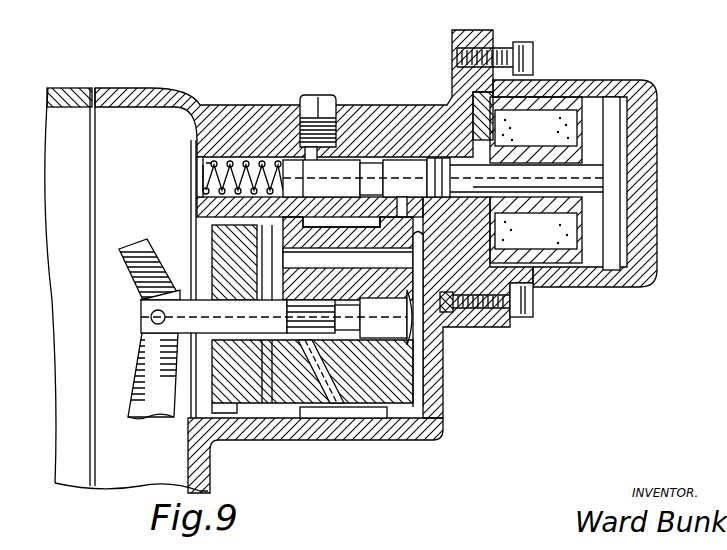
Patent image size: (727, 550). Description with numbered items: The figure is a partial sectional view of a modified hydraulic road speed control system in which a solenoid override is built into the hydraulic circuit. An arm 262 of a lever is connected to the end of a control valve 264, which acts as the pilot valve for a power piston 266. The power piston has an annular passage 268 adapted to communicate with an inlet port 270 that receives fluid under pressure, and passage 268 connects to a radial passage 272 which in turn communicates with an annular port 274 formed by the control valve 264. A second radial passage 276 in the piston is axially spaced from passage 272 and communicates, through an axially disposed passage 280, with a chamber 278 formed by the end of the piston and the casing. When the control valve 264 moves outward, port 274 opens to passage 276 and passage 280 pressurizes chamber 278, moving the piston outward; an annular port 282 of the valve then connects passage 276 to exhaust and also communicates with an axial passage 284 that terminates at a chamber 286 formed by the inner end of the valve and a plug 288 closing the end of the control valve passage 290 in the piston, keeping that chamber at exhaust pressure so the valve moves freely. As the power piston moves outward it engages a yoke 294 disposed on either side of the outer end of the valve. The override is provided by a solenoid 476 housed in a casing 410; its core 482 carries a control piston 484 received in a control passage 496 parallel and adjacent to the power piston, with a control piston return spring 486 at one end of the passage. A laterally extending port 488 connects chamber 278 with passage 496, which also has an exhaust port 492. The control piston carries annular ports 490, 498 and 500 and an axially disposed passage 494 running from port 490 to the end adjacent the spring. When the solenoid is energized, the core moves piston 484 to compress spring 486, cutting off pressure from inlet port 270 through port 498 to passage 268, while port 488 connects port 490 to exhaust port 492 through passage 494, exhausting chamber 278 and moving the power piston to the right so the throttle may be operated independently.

The arm 262 is at (152, 365).
The control valve 264 is at (160, 322).
The power piston 266 is at (214, 238).
The annular passage 268 is at (345, 218).
The inlet port 270 is at (312, 97).
The radial passage 272 is at (330, 420).
The annular port 274 is at (340, 338).
The radial passage 276 is at (262, 275).
The chamber 278 is at (443, 370).
The axially disposed passage 280 is at (318, 262).
The annular port 282 is at (222, 355).
The axial passage 284 is at (272, 345).
The chamber 286 is at (418, 318).
The plug 288 is at (487, 300).
The control valve passage 290 is at (390, 340).
The yoke 294 is at (150, 283).
The casing 410 is at (455, 97).
The solenoid 476 is at (512, 148).
The core 482 is at (598, 186).
The control piston 484 is at (394, 175).
The control piston return spring 486 is at (206, 166).
The laterally extending port 488 is at (410, 210).
The annular port 490 is at (452, 160).
The exhaust port 492 is at (206, 190).
The axially disposed passage 494 is at (343, 170).
The control passage 496 is at (200, 200).
The annular port 498 is at (312, 222).
The annular port 500 is at (385, 215).